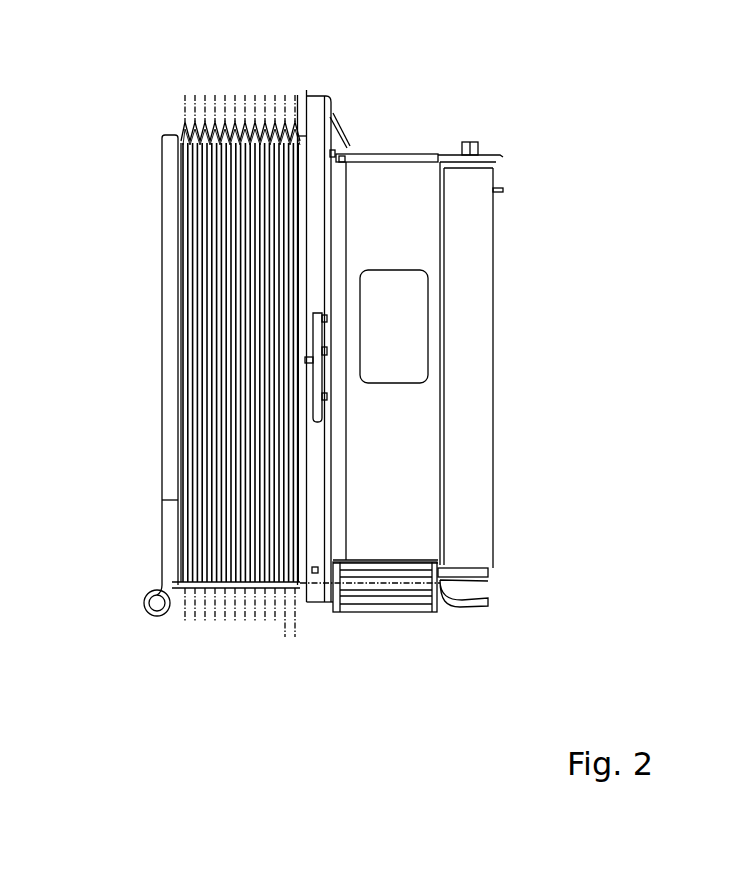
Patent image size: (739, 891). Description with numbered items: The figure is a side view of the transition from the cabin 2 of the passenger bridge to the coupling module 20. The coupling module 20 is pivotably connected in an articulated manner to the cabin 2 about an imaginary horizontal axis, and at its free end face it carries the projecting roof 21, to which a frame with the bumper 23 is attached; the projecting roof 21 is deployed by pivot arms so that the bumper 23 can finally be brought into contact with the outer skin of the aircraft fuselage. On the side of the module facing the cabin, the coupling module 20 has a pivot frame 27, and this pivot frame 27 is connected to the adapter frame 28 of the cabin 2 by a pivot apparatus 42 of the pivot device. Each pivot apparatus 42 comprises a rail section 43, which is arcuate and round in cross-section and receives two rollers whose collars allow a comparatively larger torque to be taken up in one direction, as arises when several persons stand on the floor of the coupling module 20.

The cabin 2 is at (422, 248).
The coupling module 20 is at (195, 623).
The projecting roof 21 is at (217, 112).
The bumper 23 is at (170, 205).
The pivot frame 27 is at (296, 557).
The adapter frame 28 is at (337, 502).
The pivot apparatus 42 is at (330, 413).
The rail section 43 is at (322, 343).